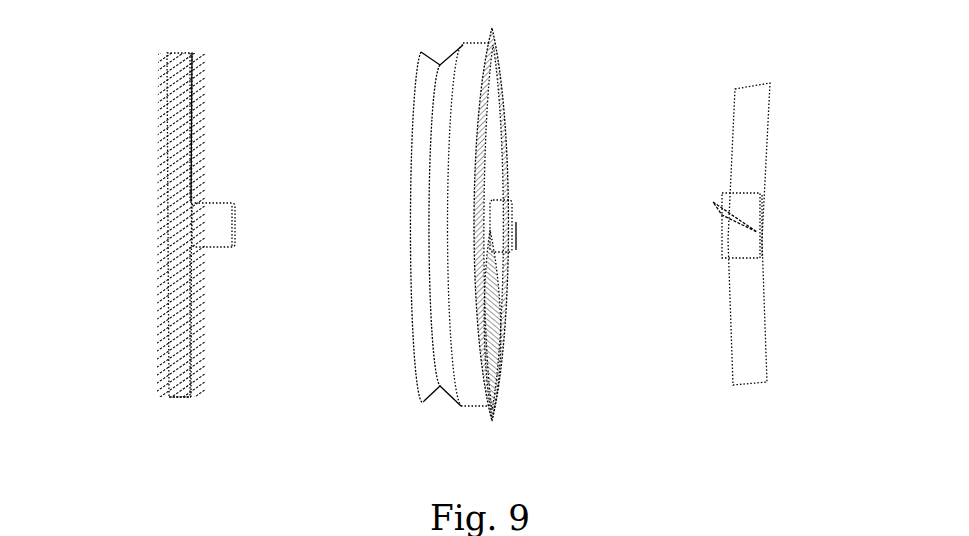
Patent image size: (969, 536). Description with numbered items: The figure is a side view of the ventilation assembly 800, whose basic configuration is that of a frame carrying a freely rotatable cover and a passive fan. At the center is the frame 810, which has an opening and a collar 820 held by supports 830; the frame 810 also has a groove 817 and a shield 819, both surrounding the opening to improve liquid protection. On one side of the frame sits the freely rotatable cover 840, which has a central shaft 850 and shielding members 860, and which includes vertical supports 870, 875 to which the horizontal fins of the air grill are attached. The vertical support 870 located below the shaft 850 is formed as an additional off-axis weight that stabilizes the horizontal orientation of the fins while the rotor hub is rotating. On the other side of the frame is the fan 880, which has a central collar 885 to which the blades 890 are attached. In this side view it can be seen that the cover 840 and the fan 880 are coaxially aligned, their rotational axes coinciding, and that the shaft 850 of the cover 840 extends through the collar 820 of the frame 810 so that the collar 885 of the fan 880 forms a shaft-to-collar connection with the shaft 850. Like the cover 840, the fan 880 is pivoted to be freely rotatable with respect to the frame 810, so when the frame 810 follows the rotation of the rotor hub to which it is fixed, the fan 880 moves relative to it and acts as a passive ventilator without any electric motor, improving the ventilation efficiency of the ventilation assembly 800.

The ventilation assembly 800 is at (608, 8).
The frame 810 is at (490, 414).
The groove 817 is at (441, 396).
The shield 819 is at (423, 52).
The collar 820 is at (512, 201).
The supports 830 is at (504, 297).
The cover 840 is at (146, 62).
The central shaft 850 is at (232, 203).
The shielding members 860 is at (193, 147).
The vertical support 870 is at (192, 390).
The vertical support 875 is at (190, 70).
The fan 880 is at (778, 62).
The central collar 885 is at (763, 222).
The blades 890 is at (765, 145).